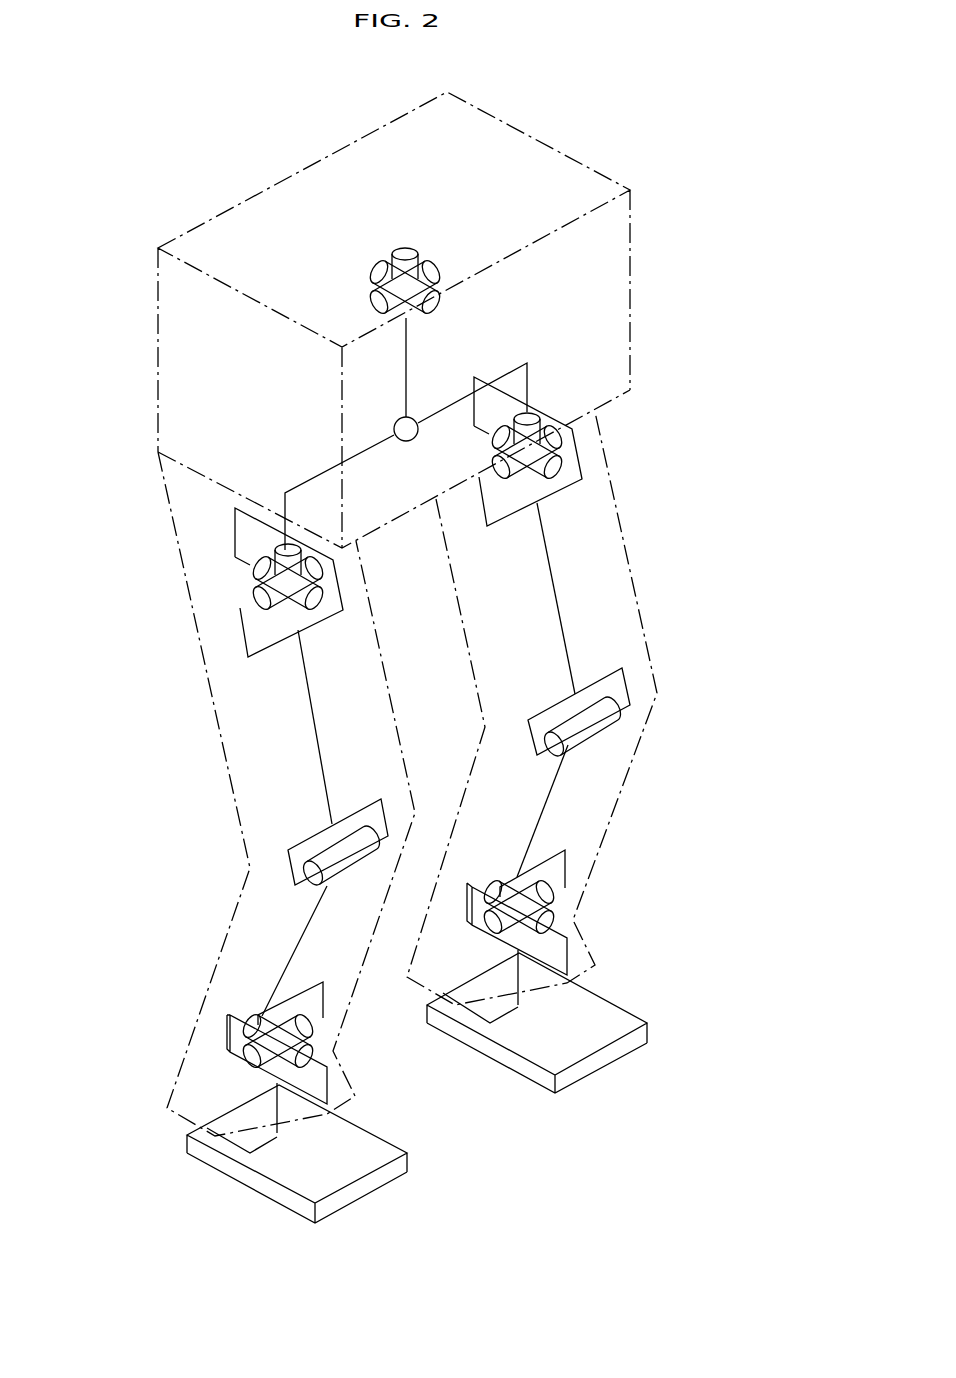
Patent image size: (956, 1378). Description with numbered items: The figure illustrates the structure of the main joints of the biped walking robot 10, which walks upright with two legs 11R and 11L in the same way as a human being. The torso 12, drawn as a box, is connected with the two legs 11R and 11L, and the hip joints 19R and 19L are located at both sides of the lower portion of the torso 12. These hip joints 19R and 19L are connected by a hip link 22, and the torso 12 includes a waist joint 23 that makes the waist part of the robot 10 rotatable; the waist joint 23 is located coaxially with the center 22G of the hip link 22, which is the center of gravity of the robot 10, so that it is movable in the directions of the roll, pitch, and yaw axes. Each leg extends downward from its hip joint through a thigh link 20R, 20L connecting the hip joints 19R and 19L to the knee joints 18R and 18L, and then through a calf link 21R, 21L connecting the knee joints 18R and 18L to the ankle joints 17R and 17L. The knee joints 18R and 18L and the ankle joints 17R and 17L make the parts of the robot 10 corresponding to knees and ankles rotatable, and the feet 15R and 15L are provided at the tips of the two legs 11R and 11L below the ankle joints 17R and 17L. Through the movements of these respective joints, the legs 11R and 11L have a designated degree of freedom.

The robot 10 is at (708, 126).
The torso 12 is at (630, 283).
The waist joint 23 is at (386, 266).
The hip link 22 is at (454, 400).
The center of the hip link 22G is at (396, 422).
The right leg 11R is at (227, 765).
The left leg 11L is at (647, 655).
The right hip joint 19R is at (257, 570).
The left hip joint 19L is at (557, 435).
The right thigh link 20R is at (305, 683).
The left thigh link 20L is at (557, 587).
The right knee joint 18R is at (312, 860).
The left knee joint 18L is at (600, 727).
The right calf link 21R is at (305, 942).
The left calf link 21L is at (558, 797).
The right ankle joint 17R is at (247, 1035).
The left ankle joint 17L is at (547, 903).
The right foot 15R is at (373, 1180).
The left foot 15L is at (613, 1050).